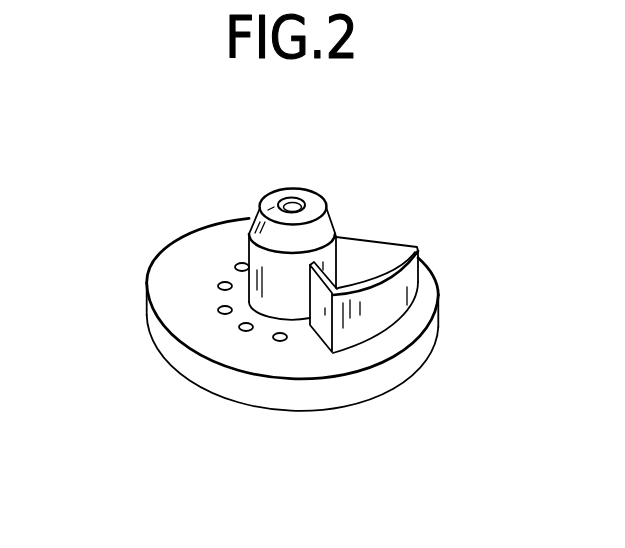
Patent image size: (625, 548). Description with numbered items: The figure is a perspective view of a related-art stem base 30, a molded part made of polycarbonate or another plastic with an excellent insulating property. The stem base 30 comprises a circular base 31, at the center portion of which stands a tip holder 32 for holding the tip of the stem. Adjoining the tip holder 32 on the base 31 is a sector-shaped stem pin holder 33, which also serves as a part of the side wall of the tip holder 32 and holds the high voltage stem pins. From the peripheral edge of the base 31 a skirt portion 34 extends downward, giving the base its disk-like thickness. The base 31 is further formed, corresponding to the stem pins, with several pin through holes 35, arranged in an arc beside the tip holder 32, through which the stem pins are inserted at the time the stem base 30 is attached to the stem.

The stem base 30 is at (321, 183).
The circular base 31 is at (293, 357).
The tip holder 32 is at (332, 222).
The stem pin holder 33 is at (398, 302).
The skirt portion 34 is at (168, 356).
The pin through holes 35 is at (218, 310).